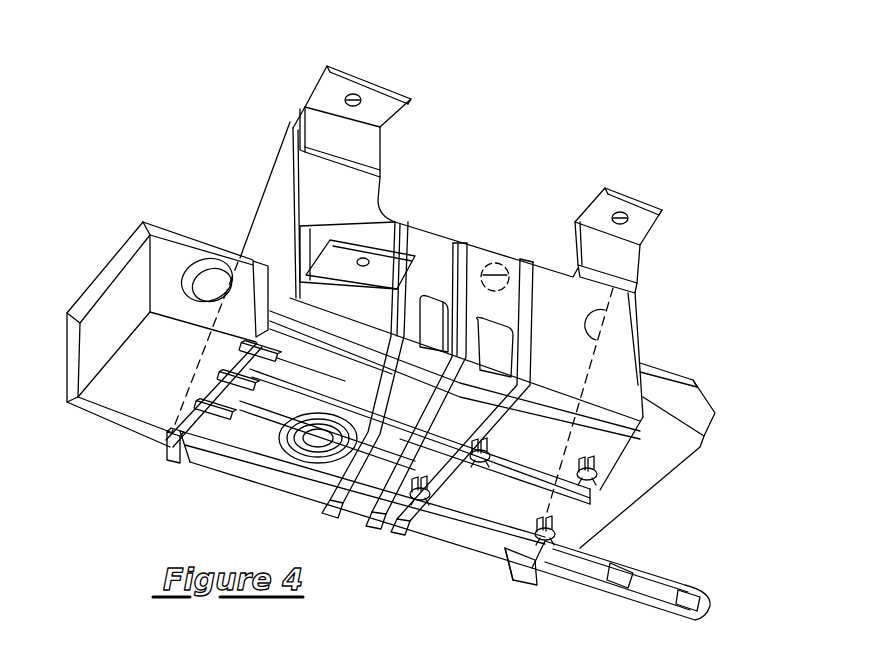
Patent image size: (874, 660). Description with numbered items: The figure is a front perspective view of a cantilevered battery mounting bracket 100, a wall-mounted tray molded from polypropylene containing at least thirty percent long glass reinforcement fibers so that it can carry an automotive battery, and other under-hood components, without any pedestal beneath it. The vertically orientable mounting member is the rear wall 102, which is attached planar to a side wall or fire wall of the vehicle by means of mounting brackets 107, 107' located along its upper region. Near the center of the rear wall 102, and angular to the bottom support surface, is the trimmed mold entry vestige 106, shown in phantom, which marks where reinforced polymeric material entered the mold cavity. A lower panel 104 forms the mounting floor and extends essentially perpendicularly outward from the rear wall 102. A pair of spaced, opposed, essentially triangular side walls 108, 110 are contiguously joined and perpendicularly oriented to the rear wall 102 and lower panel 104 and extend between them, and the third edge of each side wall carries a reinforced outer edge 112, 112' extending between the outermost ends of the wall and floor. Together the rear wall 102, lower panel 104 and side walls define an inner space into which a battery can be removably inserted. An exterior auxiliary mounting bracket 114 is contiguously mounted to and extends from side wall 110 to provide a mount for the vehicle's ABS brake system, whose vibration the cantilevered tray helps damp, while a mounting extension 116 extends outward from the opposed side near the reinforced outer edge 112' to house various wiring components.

The battery mounting bracket 100 is at (178, 103).
The rear wall 102 is at (454, 244).
The lower panel 104 is at (469, 490).
The mold entry vestige 106 is at (496, 264).
The mounting bracket 107 is at (386, 107).
The mounting bracket 107' is at (659, 222).
The side wall 108 is at (640, 337).
The side wall 110 is at (270, 233).
The reinforced outer edge 112 is at (218, 267).
The reinforced outer edge 112' is at (634, 416).
The exterior auxiliary mounting bracket 114 is at (111, 256).
The mounting extension 116 is at (654, 568).